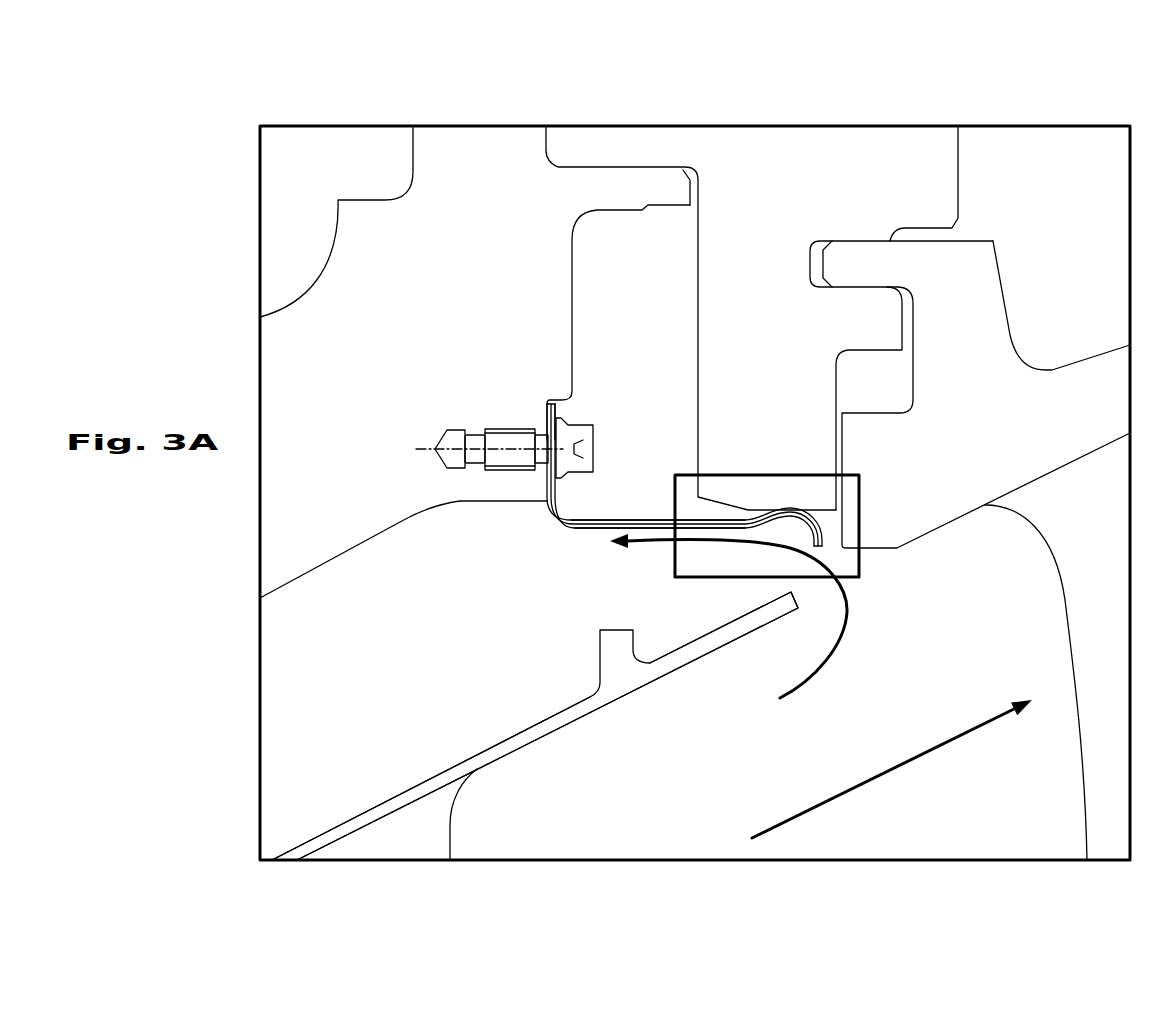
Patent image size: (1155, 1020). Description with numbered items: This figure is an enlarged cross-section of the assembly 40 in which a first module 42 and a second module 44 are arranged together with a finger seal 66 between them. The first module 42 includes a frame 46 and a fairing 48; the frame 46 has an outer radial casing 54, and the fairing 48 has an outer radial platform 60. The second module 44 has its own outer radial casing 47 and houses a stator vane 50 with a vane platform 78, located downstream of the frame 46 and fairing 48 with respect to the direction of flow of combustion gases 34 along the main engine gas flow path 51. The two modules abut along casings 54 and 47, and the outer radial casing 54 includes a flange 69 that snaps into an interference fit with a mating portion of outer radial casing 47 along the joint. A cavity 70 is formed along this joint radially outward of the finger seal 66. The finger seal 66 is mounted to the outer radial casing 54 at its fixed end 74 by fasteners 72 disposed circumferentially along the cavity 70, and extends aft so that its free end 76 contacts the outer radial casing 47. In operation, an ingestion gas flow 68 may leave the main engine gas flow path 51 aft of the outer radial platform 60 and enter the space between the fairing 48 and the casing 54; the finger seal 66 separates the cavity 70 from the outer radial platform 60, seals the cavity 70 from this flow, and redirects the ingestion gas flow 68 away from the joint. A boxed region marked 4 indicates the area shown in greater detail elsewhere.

The detail region of FIG. 4 is at (770, 475).
The combustion gases 34 is at (878, 778).
The assembly 40 is at (431, 71).
The first module 42 is at (388, 98).
The second module 44 is at (837, 114).
The frame 46 is at (293, 253).
The outer radial casing 47 is at (940, 337).
The fairing 48 is at (449, 742).
The stator vane 50 is at (1046, 682).
The main engine gas flow path 51 is at (535, 726).
The outer radial casing 54 is at (403, 478).
The outer radial platform 60 is at (550, 706).
The finger seal 66 is at (534, 389).
The ingestion gas flow 68 is at (848, 614).
The flange 69 is at (626, 180).
The cavity 70 is at (691, 318).
The fasteners 72 is at (585, 428).
The fixed end 74 is at (552, 415).
The free end 76 is at (645, 518).
The vane platform 78 is at (1051, 342).